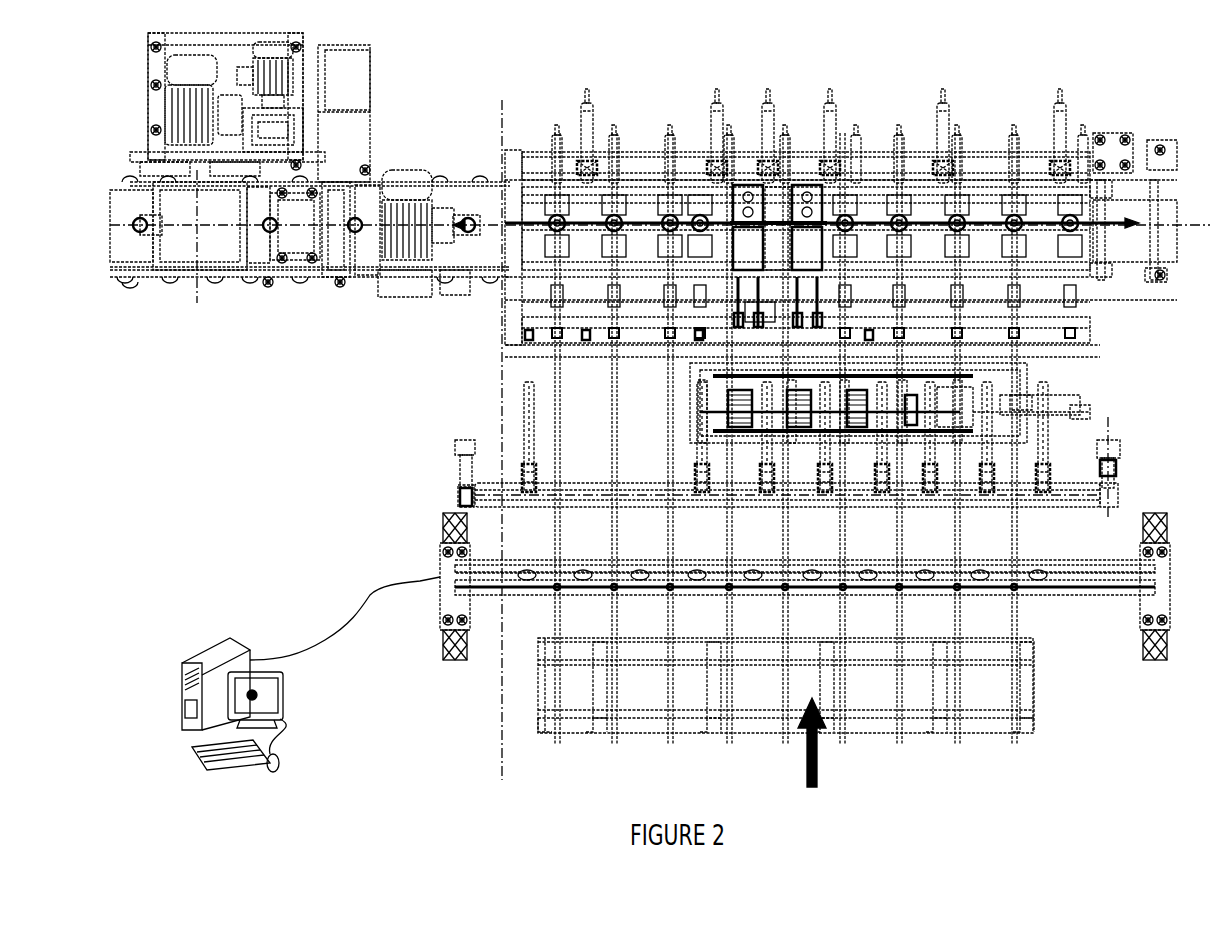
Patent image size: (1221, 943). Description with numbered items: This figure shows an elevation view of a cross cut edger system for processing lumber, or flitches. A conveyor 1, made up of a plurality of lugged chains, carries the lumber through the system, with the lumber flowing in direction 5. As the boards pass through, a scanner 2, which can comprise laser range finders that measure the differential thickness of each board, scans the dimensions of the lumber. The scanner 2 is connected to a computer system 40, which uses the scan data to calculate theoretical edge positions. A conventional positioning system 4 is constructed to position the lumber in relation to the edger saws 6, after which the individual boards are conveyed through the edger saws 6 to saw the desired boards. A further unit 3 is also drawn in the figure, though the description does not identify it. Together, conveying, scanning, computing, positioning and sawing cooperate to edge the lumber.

The conveyor 1 is at (540, 688).
The scanner 2 is at (440, 562).
The processing unit 3 is at (982, 400).
The positioning system 4 is at (745, 185).
The direction 5 is at (806, 764).
The edger saws 6 is at (363, 278).
The computer system 40 is at (207, 652).